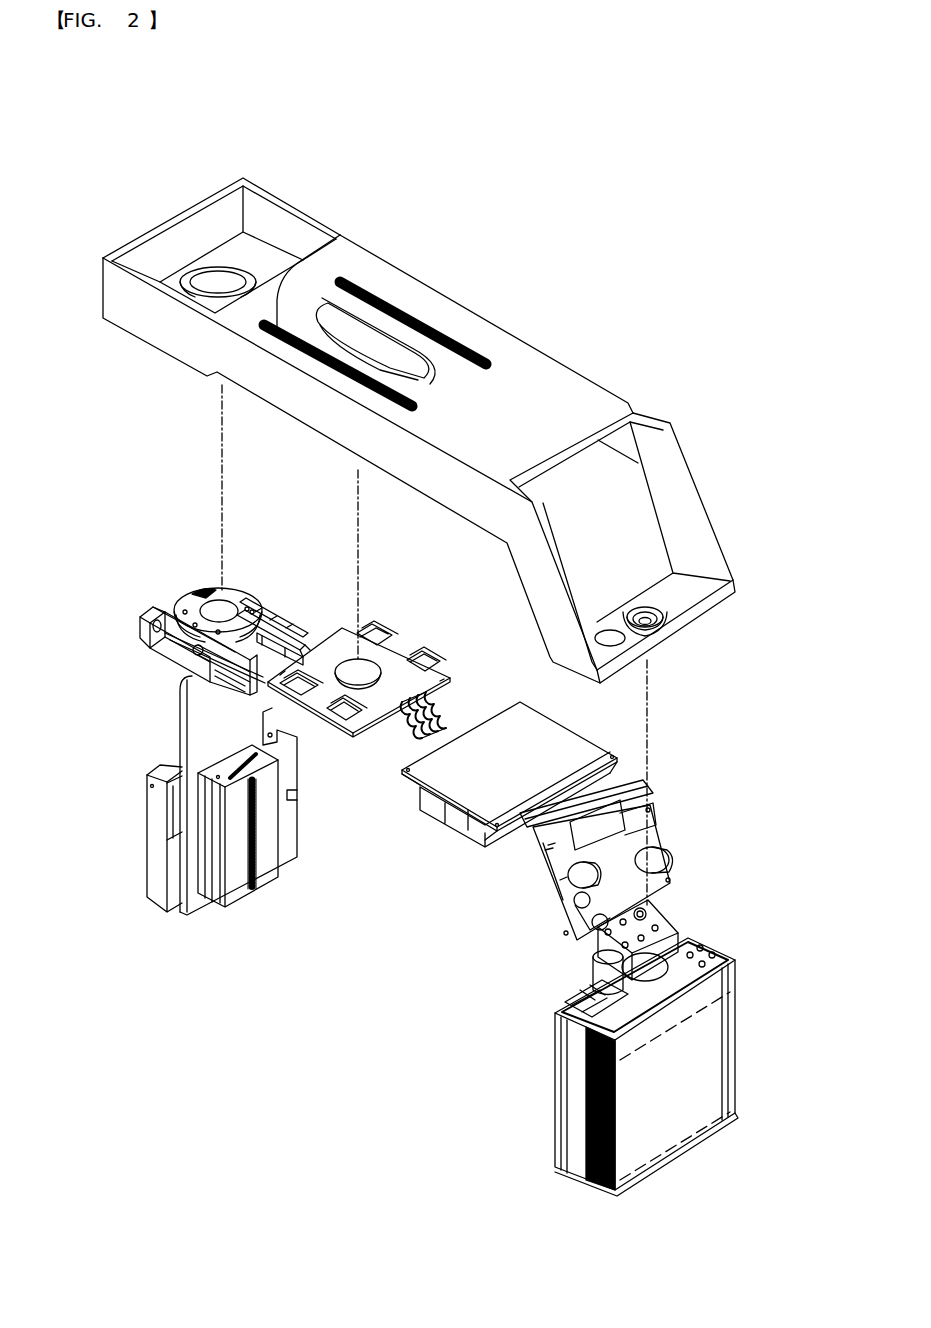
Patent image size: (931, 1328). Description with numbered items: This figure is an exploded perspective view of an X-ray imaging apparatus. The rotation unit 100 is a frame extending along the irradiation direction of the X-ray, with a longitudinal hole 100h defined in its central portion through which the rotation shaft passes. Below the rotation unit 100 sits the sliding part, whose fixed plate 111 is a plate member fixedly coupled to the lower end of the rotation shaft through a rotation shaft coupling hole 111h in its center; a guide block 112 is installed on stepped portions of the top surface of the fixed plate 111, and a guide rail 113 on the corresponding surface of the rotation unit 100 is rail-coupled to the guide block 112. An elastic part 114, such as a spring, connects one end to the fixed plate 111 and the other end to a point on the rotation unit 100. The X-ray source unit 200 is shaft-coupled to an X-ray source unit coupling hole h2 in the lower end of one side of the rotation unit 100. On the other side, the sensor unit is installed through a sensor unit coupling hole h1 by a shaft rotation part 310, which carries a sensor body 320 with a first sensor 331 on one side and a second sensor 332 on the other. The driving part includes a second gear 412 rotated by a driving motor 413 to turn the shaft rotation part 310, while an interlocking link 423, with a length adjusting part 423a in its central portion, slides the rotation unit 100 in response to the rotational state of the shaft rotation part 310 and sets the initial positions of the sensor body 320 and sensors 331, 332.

The rotation unit 100 is at (547, 407).
The sensor unit coupling hole h1 is at (222, 296).
The X-ray source unit coupling hole h2 is at (646, 597).
The guide rail 113 is at (348, 276).
The longitudinal hole 100h is at (368, 340).
The shaft rotation part 310 is at (200, 592).
The second gear 412 is at (177, 628).
The driving motor 413 is at (240, 685).
The interlocking link 423 is at (258, 620).
The length adjusting part 423a is at (282, 648).
The fixed plate 111 is at (360, 728).
The rotation shaft coupling hole 111h is at (372, 668).
The guide block 112 is at (375, 640).
The elastic part 114 is at (440, 702).
The sensor body 320 is at (185, 740).
The second sensor 332 is at (160, 862).
The first sensor 331 is at (275, 860).
The X-ray source unit 200 is at (662, 1112).